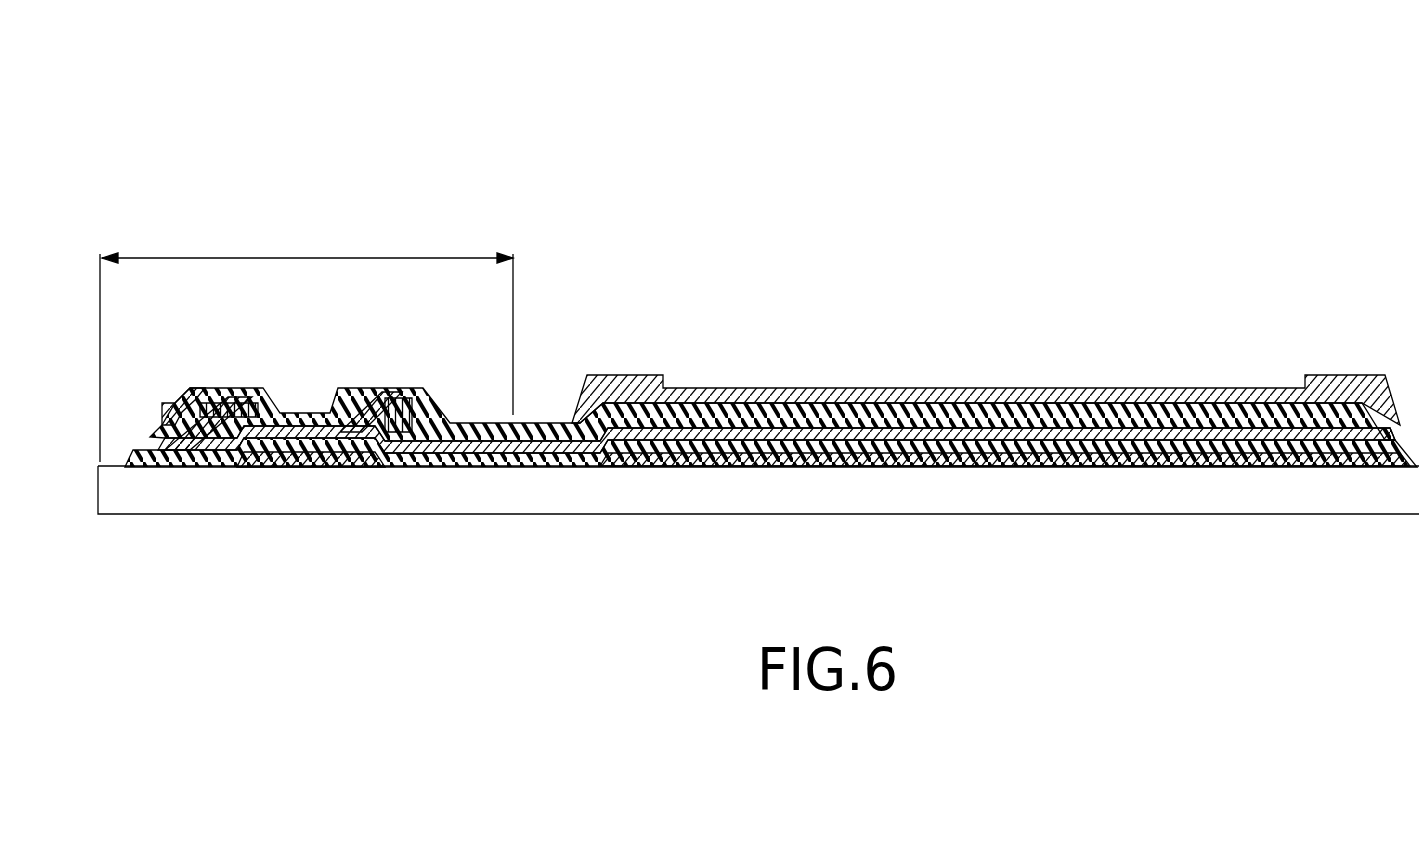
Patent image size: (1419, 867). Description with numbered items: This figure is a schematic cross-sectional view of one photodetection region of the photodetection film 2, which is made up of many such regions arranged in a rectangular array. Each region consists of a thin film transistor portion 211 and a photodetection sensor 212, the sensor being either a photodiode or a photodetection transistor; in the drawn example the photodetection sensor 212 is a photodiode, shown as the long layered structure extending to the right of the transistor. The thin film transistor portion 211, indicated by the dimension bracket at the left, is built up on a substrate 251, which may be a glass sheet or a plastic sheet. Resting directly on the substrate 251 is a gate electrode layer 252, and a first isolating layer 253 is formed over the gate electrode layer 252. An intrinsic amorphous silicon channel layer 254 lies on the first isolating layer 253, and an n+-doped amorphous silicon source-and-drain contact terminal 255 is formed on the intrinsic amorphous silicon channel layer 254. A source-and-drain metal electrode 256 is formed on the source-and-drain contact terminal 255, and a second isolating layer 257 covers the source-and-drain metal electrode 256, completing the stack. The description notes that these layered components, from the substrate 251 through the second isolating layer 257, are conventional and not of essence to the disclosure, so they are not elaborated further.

The photodetection film 2 is at (388, 155).
The thin film transistor portion 211 is at (306, 342).
The photodetection sensor 212 is at (1158, 412).
The substrate 251 is at (1187, 503).
The gate electrode layer 252 is at (302, 462).
The first isolating layer 253 is at (455, 462).
The intrinsic amorphous silicon channel layer 254 is at (222, 445).
The n+-doped amorphous silicon source-and-drain contact terminal 255 is at (200, 449).
The source-and-drain metal electrode 256 is at (530, 452).
The second isolating layer 257 is at (162, 401).